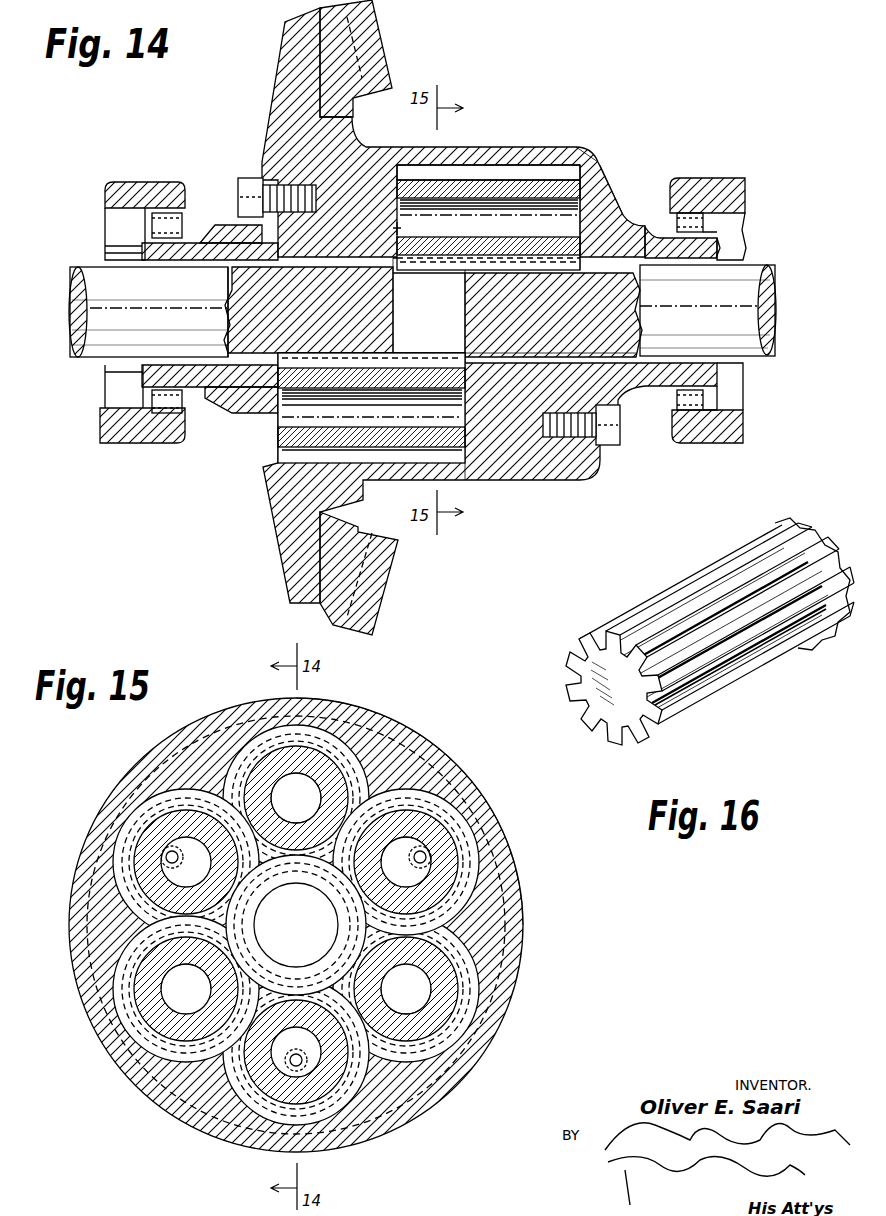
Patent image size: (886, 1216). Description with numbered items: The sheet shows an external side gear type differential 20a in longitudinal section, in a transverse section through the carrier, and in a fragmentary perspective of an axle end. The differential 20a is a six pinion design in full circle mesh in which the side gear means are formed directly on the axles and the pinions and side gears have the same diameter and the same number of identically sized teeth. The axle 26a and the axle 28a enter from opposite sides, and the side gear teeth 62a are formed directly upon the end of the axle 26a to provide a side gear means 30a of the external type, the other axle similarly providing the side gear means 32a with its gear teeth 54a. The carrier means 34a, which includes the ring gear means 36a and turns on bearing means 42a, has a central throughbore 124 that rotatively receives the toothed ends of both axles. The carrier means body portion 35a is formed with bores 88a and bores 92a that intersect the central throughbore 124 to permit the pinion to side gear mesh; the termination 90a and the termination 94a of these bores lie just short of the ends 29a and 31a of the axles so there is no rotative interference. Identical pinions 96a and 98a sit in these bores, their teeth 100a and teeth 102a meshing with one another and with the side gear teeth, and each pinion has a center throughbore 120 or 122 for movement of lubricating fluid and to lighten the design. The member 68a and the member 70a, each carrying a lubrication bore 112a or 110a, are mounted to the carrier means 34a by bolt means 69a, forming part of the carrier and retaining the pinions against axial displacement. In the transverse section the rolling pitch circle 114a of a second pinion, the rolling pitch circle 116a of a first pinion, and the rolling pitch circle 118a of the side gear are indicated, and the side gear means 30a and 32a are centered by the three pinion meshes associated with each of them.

In FIG. 14, the differential 20a is at (674, 153).
In FIG. 15, the differential 20a is at (446, 720).
In FIG. 14, the axle 26a is at (715, 300).
In FIG. 16, the axle 26a is at (786, 540).
In FIG. 14, the axle 28a is at (80, 320).
In FIG. 14, the end of the axle 29a is at (392, 306).
In FIG. 14, the side gear means 30a is at (494, 342).
In FIG. 15, the side gear means 30a is at (352, 926).
In FIG. 16, the side gear means 30a is at (634, 576).
In FIG. 14, the end of the axle 31a is at (440, 326).
In FIG. 15, the end of the axle 31a is at (314, 969).
In FIG. 16, the end of the axle 31a is at (628, 705).
In FIG. 14, the side gear means 32a is at (262, 296).
In FIG. 14, the carrier means 34a is at (357, 162).
In FIG. 14, the carrier means body portion 35a is at (545, 476).
In FIG. 14, the ring gear means 36a is at (358, 62).
In FIG. 14, the bearing means 42a is at (165, 220).
In FIG. 14, the gear teeth 54a is at (335, 270).
In FIG. 14, the side gear teeth 62a is at (553, 358).
In FIG. 16, the side gear teeth 62a is at (733, 666).
In FIG. 14, the member 68a is at (228, 232).
In FIG. 14, the bolt means 69a is at (248, 190).
In FIG. 15, the bolt means 69a is at (152, 847).
In FIG. 14, the member 70a is at (632, 240).
In FIG. 14, the bores 88a is at (447, 162).
In FIG. 14, the termination 90a is at (395, 225).
In FIG. 14, the bores 92a is at (470, 470).
In FIG. 14, the termination 94a is at (462, 412).
In FIG. 14, the pinion 96a is at (487, 172).
In FIG. 15, the pinion 96a is at (350, 785).
In FIG. 14, the pinion 98a is at (291, 446).
In FIG. 15, the pinion 98a is at (451, 890).
In FIG. 14, the teeth 100a is at (511, 172).
In FIG. 14, the teeth 102a is at (405, 365).
In FIG. 14, the bore 110a is at (600, 215).
In FIG. 15, the bore 110a is at (321, 780).
In FIG. 14, the bore 112a is at (250, 428).
In FIG. 15, the rolling pitch circle 114a is at (370, 712).
In FIG. 15, the rolling pitch circle 116a is at (150, 821).
In FIG. 15, the rolling pitch circle 118a is at (112, 892).
In FIG. 14, the center throughbore 120 is at (500, 208).
In FIG. 15, the center throughbore 120 is at (284, 780).
In FIG. 14, the center throughbore 122 is at (347, 428).
In FIG. 15, the center throughbore 122 is at (433, 858).
In FIG. 14, the central throughbore 124 is at (448, 256).
In FIG. 15, the central throughbore 124 is at (350, 872).